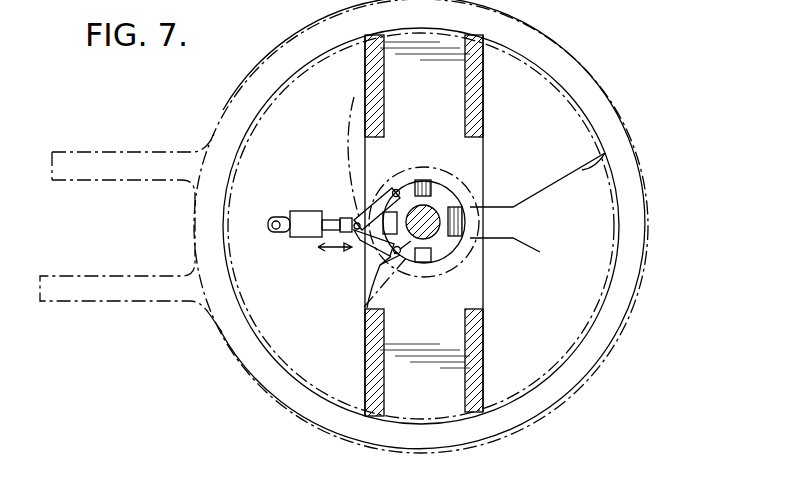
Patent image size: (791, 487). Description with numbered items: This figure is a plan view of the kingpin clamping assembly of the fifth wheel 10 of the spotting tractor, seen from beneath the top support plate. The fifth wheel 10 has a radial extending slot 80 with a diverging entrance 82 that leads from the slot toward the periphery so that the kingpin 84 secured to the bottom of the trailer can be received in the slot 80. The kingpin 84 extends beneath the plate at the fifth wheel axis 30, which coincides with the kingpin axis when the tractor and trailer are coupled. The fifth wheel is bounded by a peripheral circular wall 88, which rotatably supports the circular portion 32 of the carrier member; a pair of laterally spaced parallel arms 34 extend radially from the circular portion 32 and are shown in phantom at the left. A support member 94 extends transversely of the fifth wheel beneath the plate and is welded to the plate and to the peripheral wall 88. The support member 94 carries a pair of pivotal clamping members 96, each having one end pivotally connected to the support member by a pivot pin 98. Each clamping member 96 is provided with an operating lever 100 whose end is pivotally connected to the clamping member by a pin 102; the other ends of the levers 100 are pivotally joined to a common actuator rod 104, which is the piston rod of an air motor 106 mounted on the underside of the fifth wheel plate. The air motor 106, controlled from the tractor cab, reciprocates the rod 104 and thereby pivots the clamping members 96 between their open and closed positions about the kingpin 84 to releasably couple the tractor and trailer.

The fifth wheel 10 is at (311, 354).
The fifth wheel axis 30 is at (420, 250).
The circular portion 32 is at (606, 108).
The arms 34 is at (147, 152).
The radial extending slot 80 is at (497, 207).
The diverging entrance 82 is at (608, 173).
The kingpin 84 is at (450, 172).
The peripheral circular wall 88 is at (582, 340).
The support member 94 is at (419, 404).
The clamping members 96 is at (462, 168).
The pivot pin 98 is at (354, 97).
The operating lever 100 is at (392, 190).
The pin 102 is at (400, 188).
The actuator rod 104 is at (333, 240).
The air motor 106 is at (314, 213).